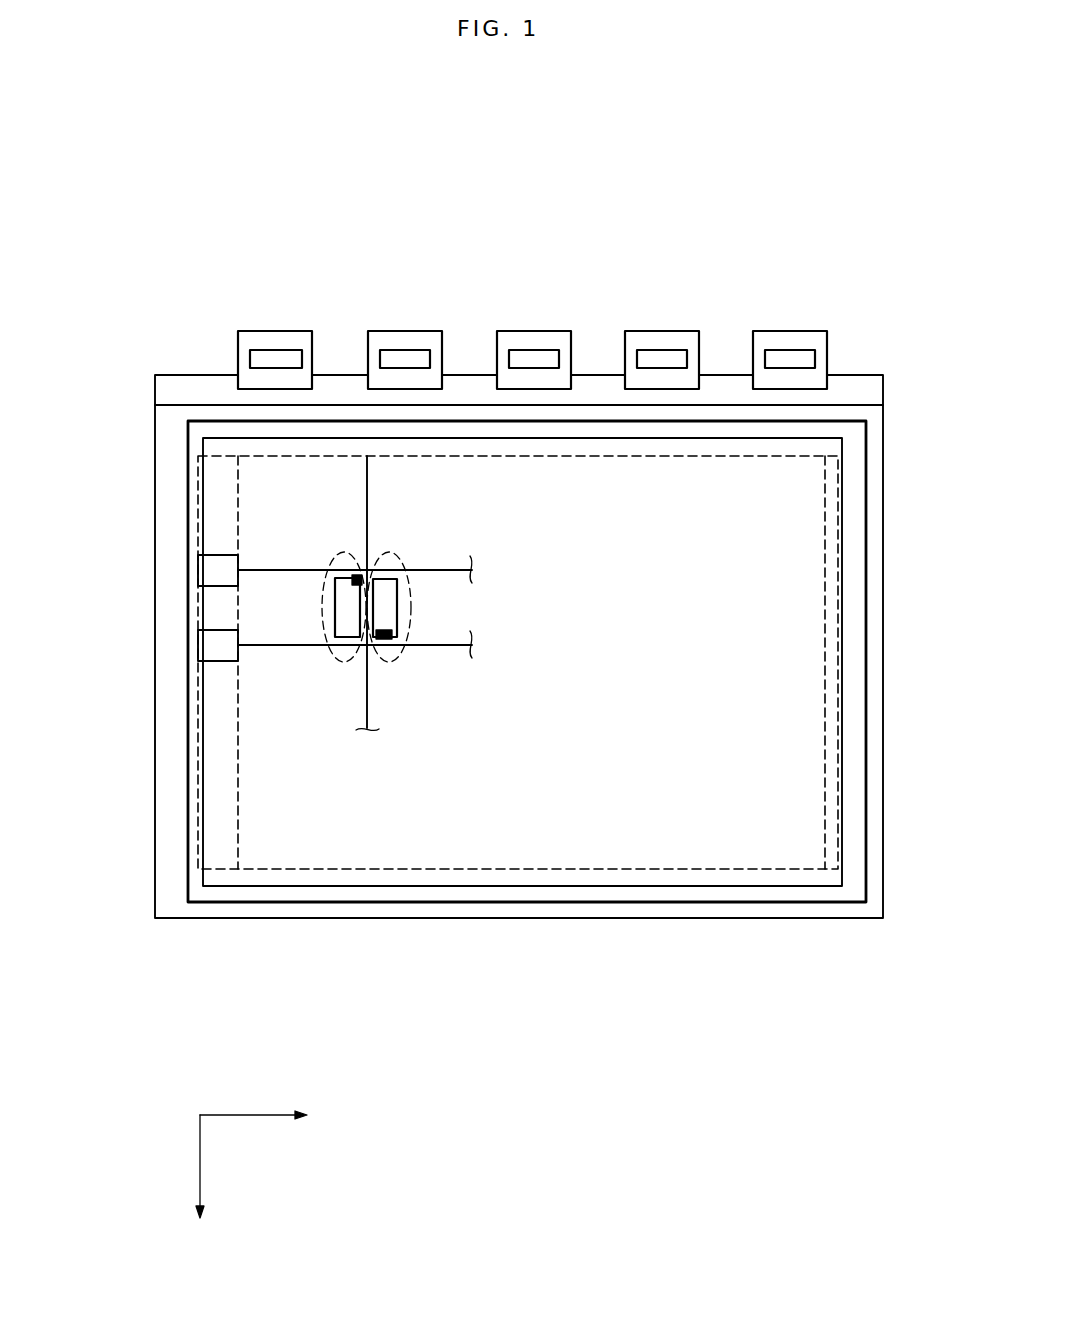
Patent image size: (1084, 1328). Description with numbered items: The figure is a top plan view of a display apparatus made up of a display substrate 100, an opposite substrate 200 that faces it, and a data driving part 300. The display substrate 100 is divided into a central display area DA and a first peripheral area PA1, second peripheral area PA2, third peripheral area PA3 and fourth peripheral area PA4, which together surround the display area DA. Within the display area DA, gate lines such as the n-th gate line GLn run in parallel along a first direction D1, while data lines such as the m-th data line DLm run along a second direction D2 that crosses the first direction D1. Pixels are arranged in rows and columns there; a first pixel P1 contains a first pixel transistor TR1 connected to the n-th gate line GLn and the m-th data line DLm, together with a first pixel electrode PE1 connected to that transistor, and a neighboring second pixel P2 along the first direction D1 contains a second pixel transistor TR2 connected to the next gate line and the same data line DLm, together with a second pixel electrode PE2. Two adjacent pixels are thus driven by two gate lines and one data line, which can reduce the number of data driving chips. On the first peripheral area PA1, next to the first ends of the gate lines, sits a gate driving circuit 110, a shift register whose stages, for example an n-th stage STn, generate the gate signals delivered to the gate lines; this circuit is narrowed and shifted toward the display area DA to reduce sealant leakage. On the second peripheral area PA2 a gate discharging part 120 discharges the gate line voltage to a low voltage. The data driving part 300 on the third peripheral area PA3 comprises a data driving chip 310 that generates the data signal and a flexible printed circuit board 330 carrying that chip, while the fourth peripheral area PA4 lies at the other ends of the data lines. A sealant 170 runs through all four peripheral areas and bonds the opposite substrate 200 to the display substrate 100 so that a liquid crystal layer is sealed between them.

The display substrate 100 is at (883, 377).
The opposite substrate 200 is at (883, 407).
The gate driving circuit 110 is at (216, 520).
The gate discharging part 120 is at (833, 523).
The sealant 170 is at (442, 903).
The data driving part 300 is at (527, 306).
The data driving chip 310 is at (270, 350).
The flexible printed circuit board 330 is at (298, 331).
The first peripheral area PA1 is at (158, 687).
The second peripheral area PA2 is at (878, 689).
The third peripheral area PA3 is at (465, 384).
The fourth peripheral area PA4 is at (630, 913).
The display area DA is at (529, 761).
The m-th data line DLm is at (369, 480).
The n-th gate line GLn is at (457, 570).
The n-th stage STn is at (212, 570).
The first pixel transistor TR1 is at (354, 577).
The second pixel transistor TR2 is at (380, 648).
The first pixel P1 is at (323, 625).
The second pixel P2 is at (387, 567).
The first pixel electrode PE1 is at (335, 612).
The second pixel electrode PE2 is at (398, 598).
The first direction D1 is at (272, 1115).
The second direction D2 is at (198, 1185).